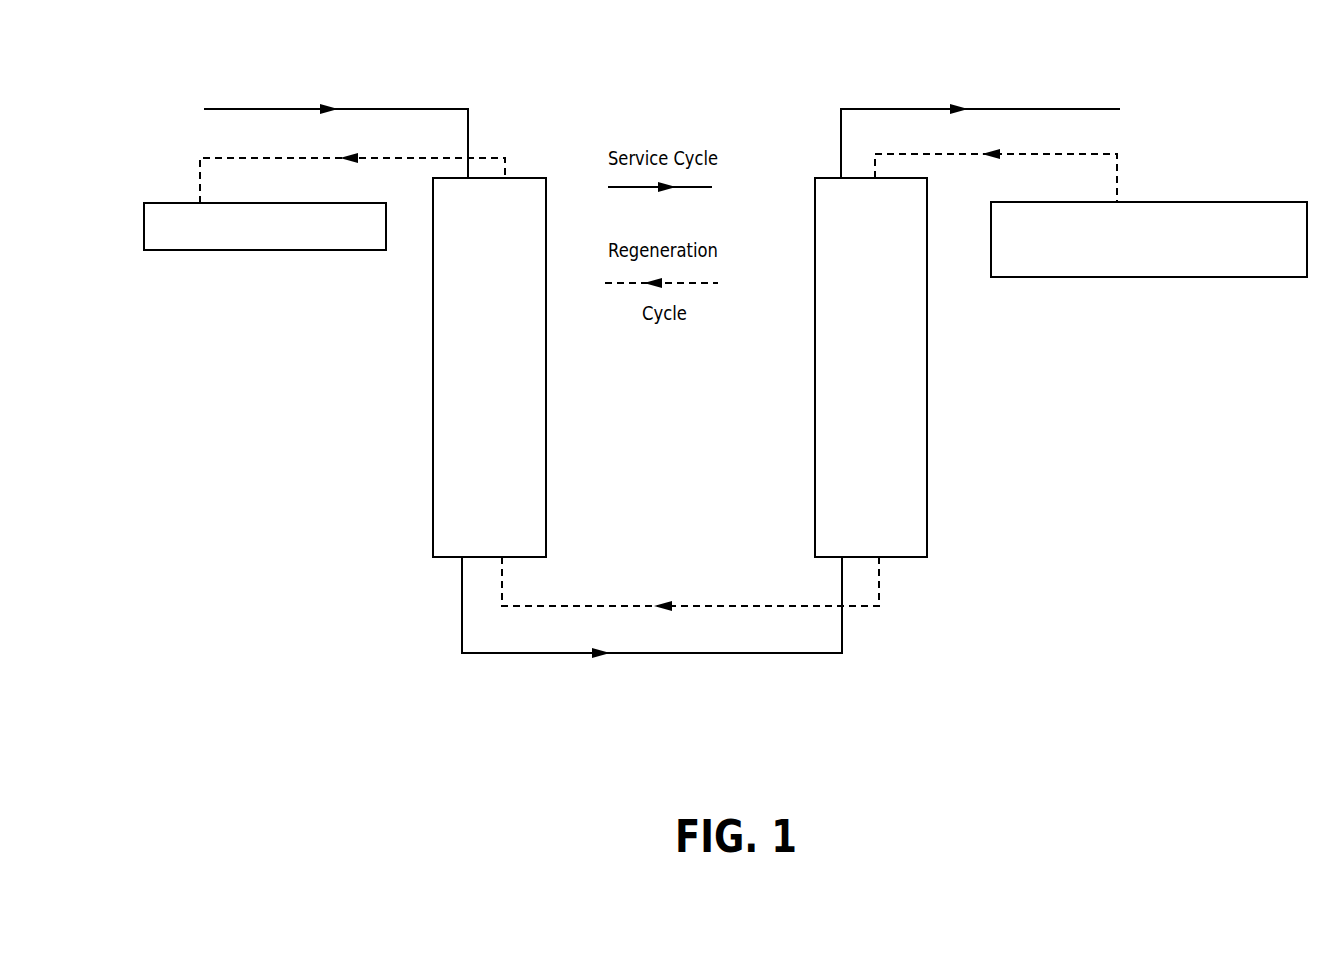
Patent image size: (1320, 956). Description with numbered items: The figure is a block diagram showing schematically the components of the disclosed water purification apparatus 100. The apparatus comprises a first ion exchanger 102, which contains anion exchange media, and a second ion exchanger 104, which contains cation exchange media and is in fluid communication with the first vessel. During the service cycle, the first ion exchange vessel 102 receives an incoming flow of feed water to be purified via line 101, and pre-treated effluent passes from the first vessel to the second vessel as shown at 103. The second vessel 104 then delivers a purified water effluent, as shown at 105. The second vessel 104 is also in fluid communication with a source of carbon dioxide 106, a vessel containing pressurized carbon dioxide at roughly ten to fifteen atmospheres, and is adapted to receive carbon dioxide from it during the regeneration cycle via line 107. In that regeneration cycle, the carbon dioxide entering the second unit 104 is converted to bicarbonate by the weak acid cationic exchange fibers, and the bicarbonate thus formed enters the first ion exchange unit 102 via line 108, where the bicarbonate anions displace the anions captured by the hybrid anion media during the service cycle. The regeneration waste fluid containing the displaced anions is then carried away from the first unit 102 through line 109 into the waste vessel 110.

The purification apparatus 100 is at (292, 468).
The feed water line 101 is at (280, 108).
The first ion exchanger 102 is at (504, 385).
The pre-treated effluent line 103 is at (657, 655).
The second ion exchanger 104 is at (885, 383).
The purified water effluent line 105 is at (990, 108).
The source of carbon dioxide 106 is at (1162, 253).
The carbon dioxide line 107 is at (1092, 154).
The bicarbonate line 108 is at (700, 605).
The waste line 109 is at (202, 157).
The waste vessel 110 is at (278, 240).